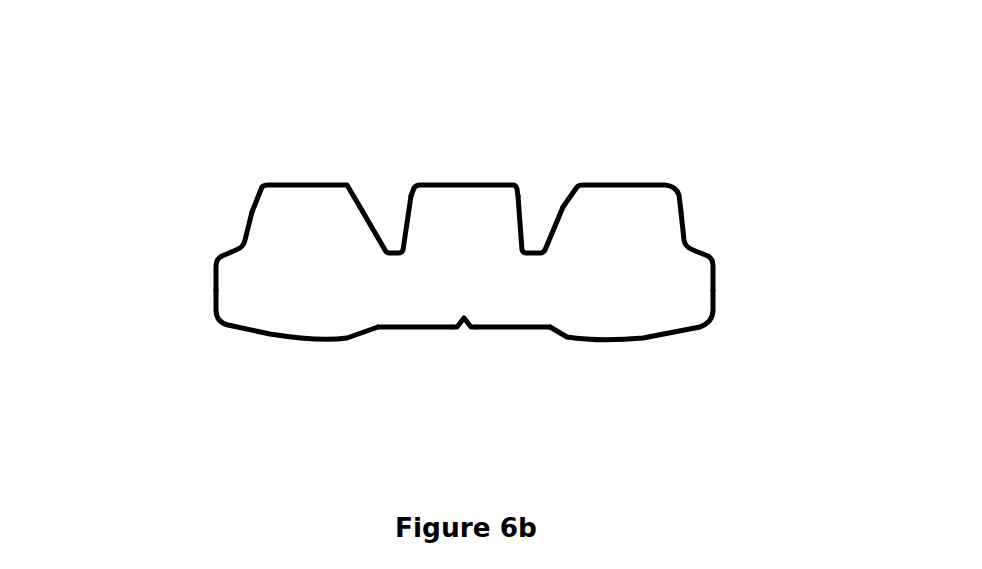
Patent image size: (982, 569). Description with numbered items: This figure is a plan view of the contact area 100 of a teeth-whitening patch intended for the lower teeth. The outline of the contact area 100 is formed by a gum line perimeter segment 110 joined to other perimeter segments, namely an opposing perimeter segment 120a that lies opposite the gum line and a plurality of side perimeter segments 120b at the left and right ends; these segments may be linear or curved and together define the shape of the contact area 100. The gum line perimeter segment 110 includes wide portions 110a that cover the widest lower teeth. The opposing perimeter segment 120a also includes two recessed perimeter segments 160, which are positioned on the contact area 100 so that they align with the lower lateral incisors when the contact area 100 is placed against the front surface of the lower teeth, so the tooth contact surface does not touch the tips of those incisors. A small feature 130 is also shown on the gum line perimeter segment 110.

The contact area 100 is at (202, 167).
The gum line perimeter segment 110 is at (420, 330).
The wide portion 110a is at (311, 338).
The opposing perimeter segment 120a is at (318, 180).
The side perimeter segment 120b is at (247, 222).
The notch 130 is at (465, 328).
The recessed perimeter segment 160 is at (392, 248).